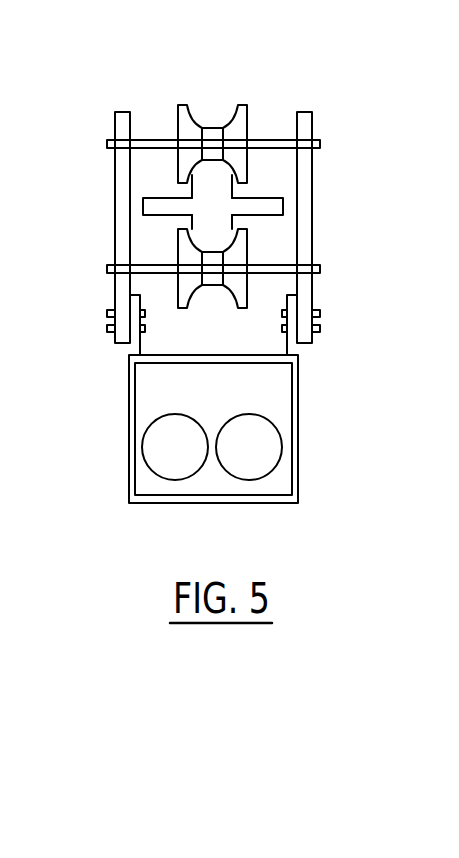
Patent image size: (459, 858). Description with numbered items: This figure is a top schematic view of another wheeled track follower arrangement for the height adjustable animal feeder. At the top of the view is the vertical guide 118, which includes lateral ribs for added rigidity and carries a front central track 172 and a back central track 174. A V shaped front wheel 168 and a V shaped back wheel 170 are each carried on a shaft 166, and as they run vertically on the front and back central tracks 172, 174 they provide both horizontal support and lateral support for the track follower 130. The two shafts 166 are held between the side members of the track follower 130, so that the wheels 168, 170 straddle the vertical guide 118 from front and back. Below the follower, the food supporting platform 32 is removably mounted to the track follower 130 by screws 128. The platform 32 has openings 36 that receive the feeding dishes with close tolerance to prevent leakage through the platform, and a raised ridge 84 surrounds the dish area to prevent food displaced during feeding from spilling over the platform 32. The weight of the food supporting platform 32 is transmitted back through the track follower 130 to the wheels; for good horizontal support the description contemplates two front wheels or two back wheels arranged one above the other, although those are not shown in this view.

The track follower 130 is at (310, 128).
The shaft 166 is at (258, 142).
The back wheel 170 is at (140, 118).
The back central track 174 is at (208, 168).
The vertical guide 118 is at (252, 205).
The front central track 172 is at (212, 237).
The front wheel 168 is at (238, 288).
The screws 128 is at (314, 330).
The raised ridge 84 is at (298, 498).
The food supporting platform 32 is at (150, 484).
The openings 36 is at (168, 422).